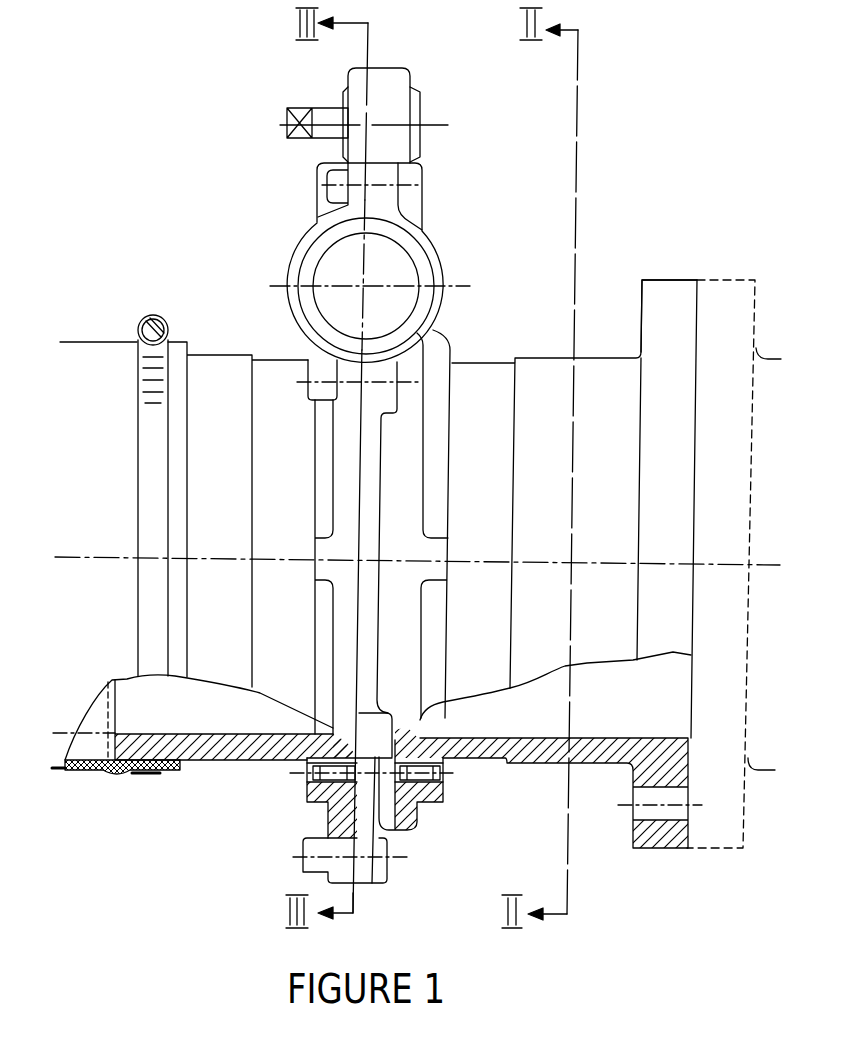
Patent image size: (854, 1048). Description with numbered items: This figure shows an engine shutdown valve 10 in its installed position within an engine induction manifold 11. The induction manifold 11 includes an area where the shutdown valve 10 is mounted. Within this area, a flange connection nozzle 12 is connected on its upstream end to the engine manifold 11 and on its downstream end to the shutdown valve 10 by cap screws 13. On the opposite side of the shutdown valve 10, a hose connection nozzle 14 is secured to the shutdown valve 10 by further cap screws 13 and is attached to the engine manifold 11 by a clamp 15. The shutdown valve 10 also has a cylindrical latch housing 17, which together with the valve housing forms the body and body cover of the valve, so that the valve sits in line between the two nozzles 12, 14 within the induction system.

The engine shutdown valve 10 is at (450, 332).
The engine induction manifold 11 is at (672, 266).
The flange connection nozzle 12 is at (640, 849).
The cap screws 13 is at (450, 768).
The hose connection nozzle 14 is at (245, 761).
The clamp 15 is at (166, 316).
The cylindrical latch housing 17 is at (422, 200).